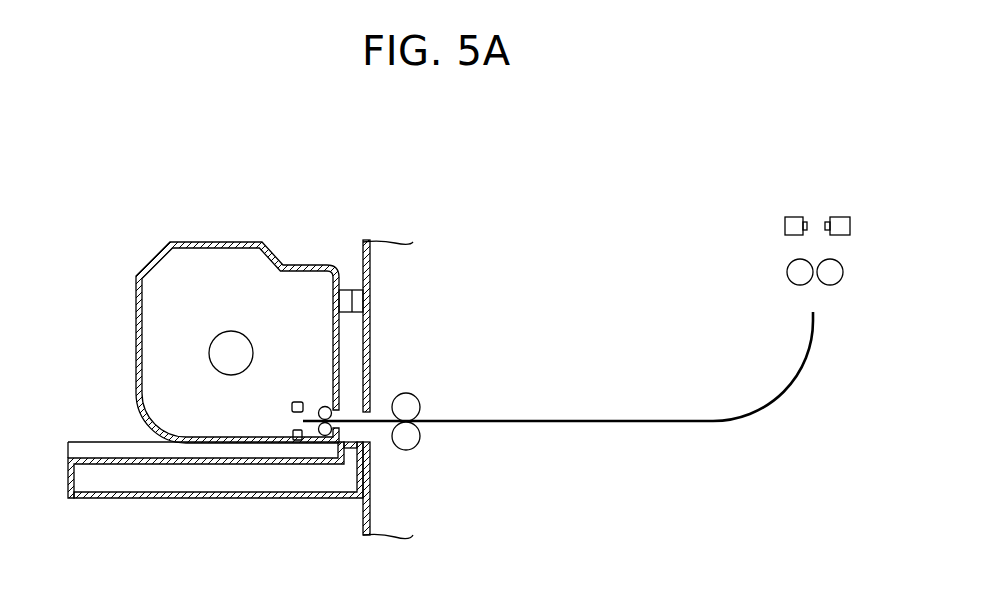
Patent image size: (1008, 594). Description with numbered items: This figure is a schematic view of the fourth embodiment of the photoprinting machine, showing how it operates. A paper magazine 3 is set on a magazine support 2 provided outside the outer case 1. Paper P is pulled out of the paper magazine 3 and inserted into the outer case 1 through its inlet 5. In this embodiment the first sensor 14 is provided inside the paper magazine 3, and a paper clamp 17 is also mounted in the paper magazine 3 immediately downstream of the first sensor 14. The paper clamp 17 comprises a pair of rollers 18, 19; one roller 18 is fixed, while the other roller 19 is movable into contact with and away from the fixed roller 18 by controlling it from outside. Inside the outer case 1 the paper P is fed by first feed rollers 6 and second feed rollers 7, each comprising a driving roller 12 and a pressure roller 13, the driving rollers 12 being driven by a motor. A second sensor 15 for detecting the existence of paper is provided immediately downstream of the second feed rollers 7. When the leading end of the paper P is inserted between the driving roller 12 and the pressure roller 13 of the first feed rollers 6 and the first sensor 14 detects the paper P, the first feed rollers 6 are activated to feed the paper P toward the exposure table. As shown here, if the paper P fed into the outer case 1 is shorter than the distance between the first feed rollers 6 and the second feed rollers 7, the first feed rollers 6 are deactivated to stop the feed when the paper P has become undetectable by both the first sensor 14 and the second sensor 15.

The outer case 1 is at (362, 258).
The magazine support 2 is at (101, 442).
The paper magazine 3 is at (152, 258).
The inlet 5 is at (372, 432).
The first feed rollers 6 is at (423, 437).
The second feed rollers 7 is at (783, 273).
The driving roller 12 is at (413, 403).
The pressure roller 13 is at (413, 443).
The first sensor 14 is at (295, 401).
The second sensor 15 is at (783, 223).
The paper clamp 17 is at (327, 400).
The fixed roller 18 is at (338, 408).
The movable roller 19 is at (325, 437).
The paper P is at (749, 417).